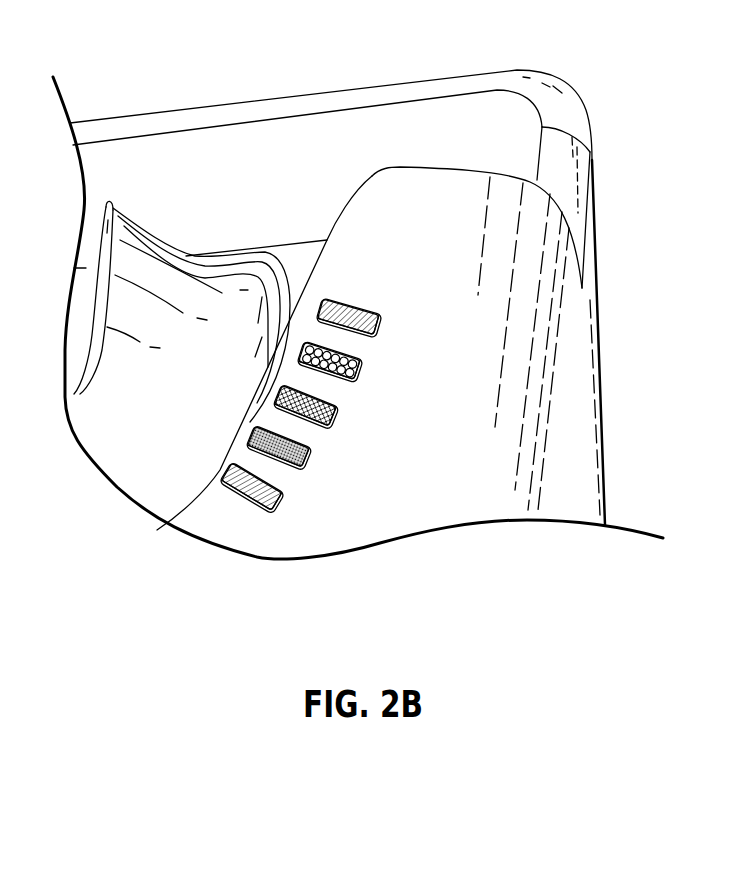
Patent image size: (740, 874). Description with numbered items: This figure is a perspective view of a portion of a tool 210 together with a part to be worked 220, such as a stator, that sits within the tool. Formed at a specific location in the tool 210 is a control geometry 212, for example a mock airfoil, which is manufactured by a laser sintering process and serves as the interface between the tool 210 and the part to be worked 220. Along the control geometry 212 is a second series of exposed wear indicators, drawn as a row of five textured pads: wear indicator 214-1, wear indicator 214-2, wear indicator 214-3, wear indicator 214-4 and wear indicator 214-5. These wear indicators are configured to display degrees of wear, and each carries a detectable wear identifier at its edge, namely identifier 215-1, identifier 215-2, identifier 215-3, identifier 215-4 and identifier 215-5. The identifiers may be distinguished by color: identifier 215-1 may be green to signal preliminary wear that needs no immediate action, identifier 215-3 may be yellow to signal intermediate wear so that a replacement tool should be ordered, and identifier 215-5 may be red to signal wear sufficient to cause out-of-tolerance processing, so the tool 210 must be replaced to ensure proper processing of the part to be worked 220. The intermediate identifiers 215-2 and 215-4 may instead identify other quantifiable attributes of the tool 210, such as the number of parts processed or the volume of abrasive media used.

The tool 210 is at (265, 175).
The control geometry 212 is at (561, 487).
The part to be worked 220 is at (113, 203).
The wear indicator 214-1 is at (284, 490).
The wear indicator 214-2 is at (312, 441).
The wear indicator 214-3 is at (340, 397).
The wear indicator 214-4 is at (362, 351).
The wear indicator 214-5 is at (374, 301).
The identifier 215-1 is at (275, 513).
The intermediate identifier 215-2 is at (308, 461).
The identifier 215-3 is at (336, 416).
The intermediate identifier 215-4 is at (362, 364).
The identifier 215-5 is at (388, 323).